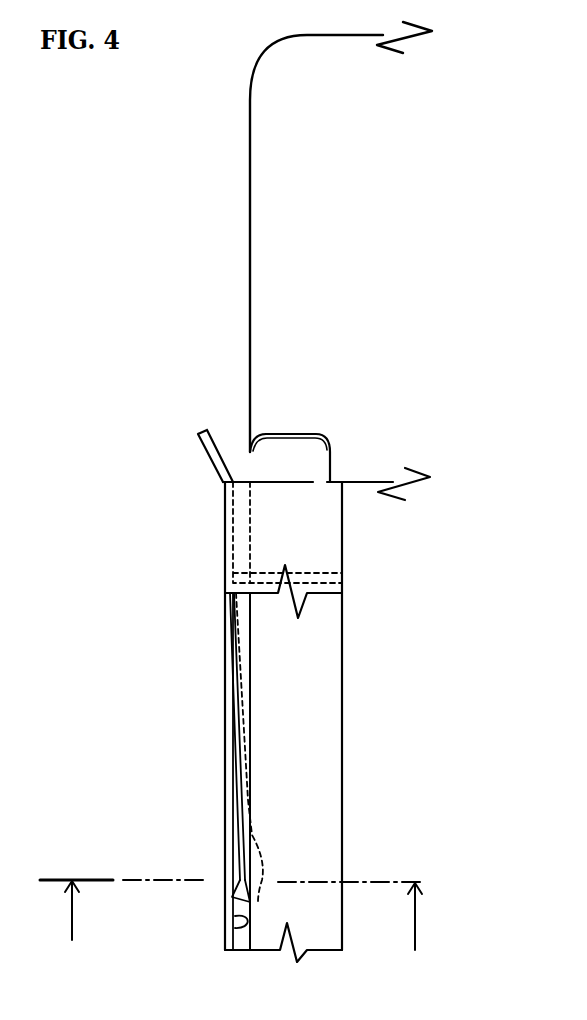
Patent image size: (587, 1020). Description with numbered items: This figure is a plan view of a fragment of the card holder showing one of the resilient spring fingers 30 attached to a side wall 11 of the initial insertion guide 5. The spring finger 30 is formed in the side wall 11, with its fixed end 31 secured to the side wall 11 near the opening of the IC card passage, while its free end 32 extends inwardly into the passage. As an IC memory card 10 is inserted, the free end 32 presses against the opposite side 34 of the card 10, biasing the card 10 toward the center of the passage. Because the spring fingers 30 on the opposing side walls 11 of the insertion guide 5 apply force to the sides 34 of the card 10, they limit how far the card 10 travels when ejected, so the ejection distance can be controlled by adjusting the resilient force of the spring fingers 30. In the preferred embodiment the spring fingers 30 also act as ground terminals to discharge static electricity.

The IC memory card 10 is at (282, 152).
The initial insertion guide 5 is at (483, 372).
The fixed end of spring finger 31 is at (225, 538).
The resilient spring finger 30 is at (239, 797).
The free end of spring finger 32 is at (230, 897).
The opposite side of the card 34 is at (257, 803).
The side wall 11 is at (237, 923).